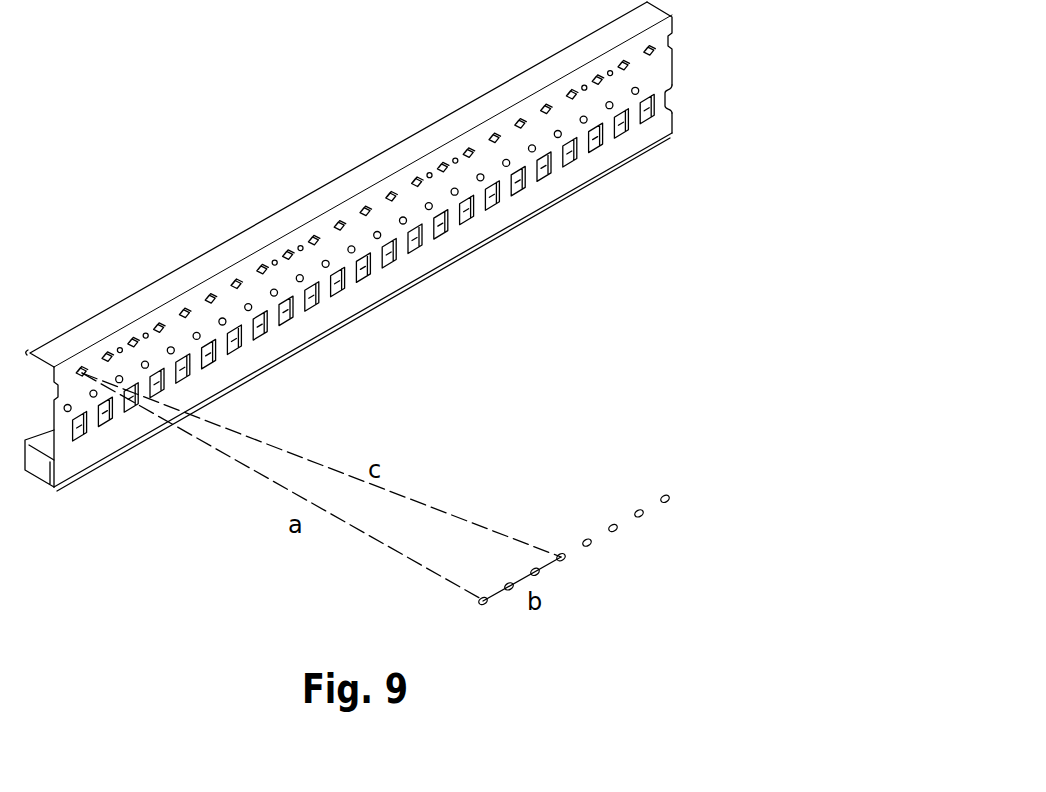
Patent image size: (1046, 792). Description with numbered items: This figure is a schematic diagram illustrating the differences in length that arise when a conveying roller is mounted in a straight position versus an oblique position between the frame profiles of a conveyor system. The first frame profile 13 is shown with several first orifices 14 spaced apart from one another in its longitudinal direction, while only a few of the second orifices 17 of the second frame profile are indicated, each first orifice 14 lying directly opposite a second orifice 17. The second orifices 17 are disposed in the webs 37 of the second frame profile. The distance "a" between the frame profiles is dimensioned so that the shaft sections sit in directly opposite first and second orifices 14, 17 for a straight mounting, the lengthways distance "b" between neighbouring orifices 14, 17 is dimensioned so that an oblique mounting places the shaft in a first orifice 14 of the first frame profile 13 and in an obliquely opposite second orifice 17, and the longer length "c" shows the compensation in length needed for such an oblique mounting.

The first frame profile 13 is at (257, 238).
The first orifices 14 is at (130, 340).
The second orifices 17 is at (670, 494).
The webs 37 is at (666, 122).